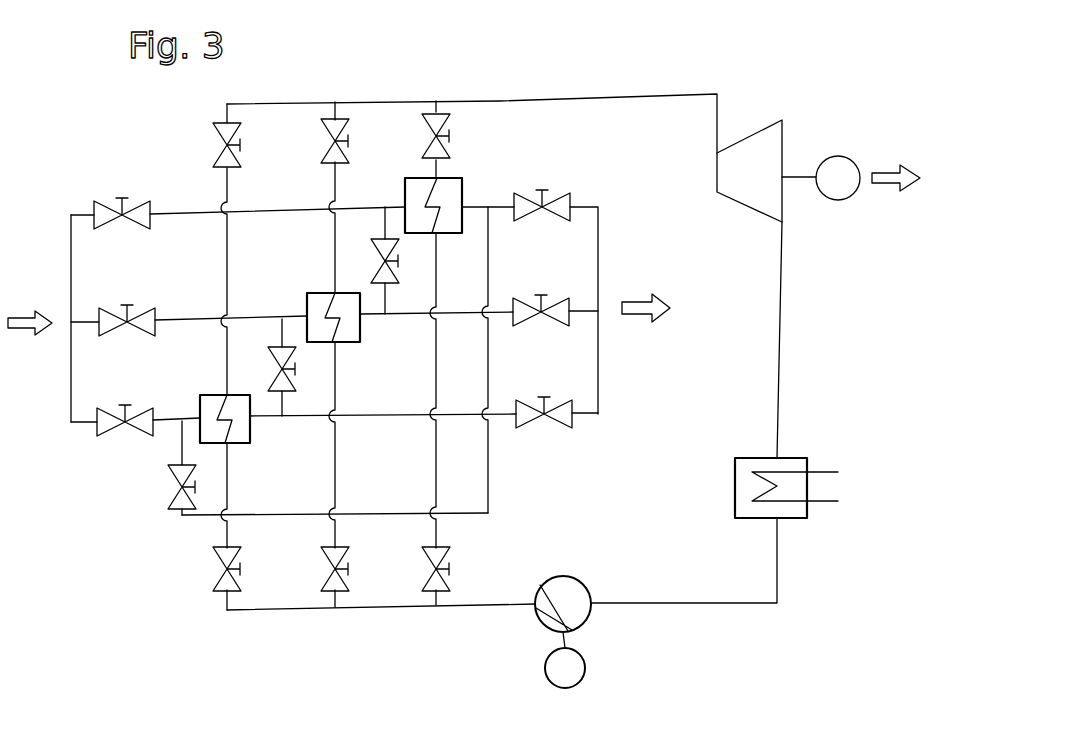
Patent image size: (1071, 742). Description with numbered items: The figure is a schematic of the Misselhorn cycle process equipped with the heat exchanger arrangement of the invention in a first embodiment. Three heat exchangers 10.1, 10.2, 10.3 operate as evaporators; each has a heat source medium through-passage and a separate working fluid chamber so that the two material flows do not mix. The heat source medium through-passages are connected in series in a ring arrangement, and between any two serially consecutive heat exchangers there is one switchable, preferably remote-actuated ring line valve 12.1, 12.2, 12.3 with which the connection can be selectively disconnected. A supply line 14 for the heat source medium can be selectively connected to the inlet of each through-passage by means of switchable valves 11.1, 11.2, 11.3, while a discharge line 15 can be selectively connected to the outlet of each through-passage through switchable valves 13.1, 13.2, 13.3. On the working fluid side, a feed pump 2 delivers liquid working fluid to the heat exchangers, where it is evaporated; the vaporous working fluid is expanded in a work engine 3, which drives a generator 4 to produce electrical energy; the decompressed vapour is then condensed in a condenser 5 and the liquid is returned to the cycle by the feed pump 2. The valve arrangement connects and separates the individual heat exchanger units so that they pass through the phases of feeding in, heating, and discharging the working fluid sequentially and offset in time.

The feed pump 2 is at (584, 633).
The work engine 3 is at (752, 118).
The generator 4 is at (846, 155).
The condenser 5 is at (794, 527).
The heat exchanger 10.1 is at (405, 196).
The heat exchanger 10.2 is at (200, 402).
The heat exchanger 10.3 is at (307, 300).
The switchable valve 11.1 is at (114, 203).
The switchable valve 11.2 is at (121, 308).
The switchable valve 11.3 is at (118, 408).
The ring line valve 12.1 is at (371, 272).
The ring line valve 12.2 is at (172, 488).
The ring line valve 12.3 is at (270, 365).
The switchable valve 13.1 is at (550, 287).
The switchable valve 13.2 is at (548, 193).
The switchable valve 13.3 is at (548, 400).
The supply line 14 is at (33, 316).
The discharge line 15 is at (648, 297).